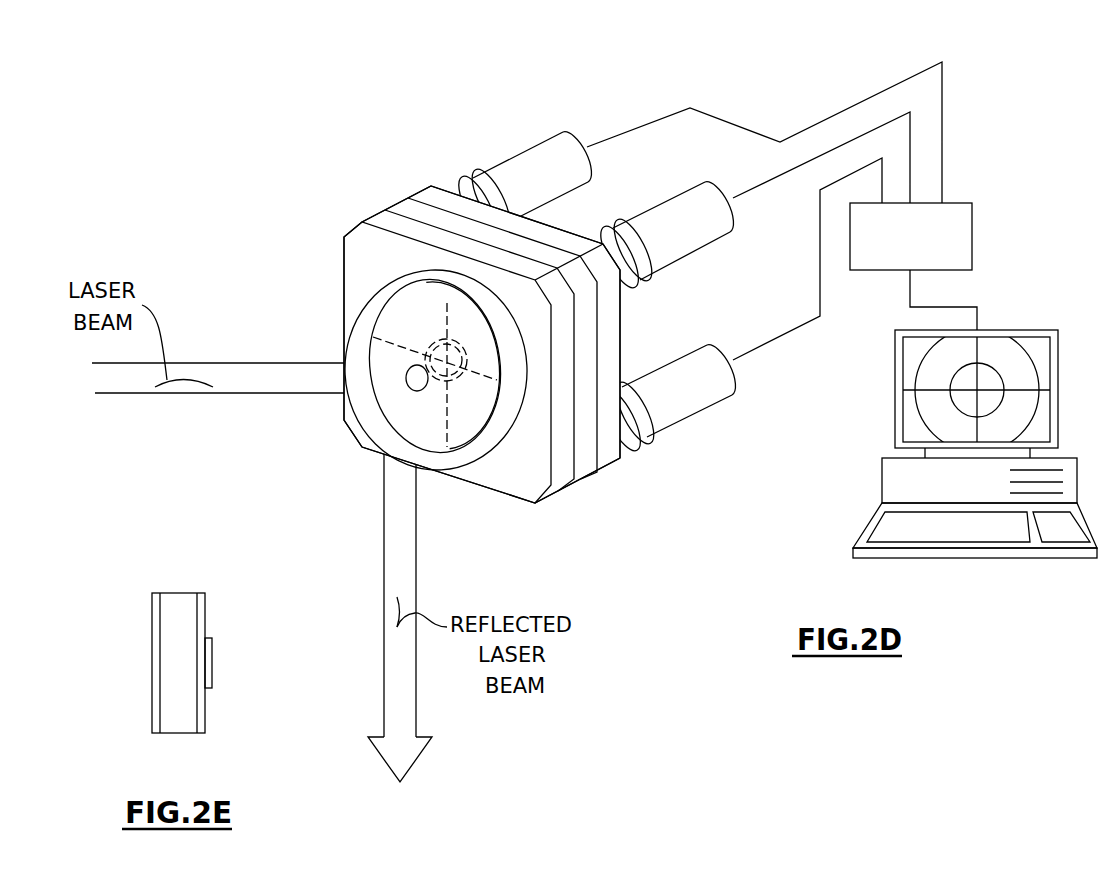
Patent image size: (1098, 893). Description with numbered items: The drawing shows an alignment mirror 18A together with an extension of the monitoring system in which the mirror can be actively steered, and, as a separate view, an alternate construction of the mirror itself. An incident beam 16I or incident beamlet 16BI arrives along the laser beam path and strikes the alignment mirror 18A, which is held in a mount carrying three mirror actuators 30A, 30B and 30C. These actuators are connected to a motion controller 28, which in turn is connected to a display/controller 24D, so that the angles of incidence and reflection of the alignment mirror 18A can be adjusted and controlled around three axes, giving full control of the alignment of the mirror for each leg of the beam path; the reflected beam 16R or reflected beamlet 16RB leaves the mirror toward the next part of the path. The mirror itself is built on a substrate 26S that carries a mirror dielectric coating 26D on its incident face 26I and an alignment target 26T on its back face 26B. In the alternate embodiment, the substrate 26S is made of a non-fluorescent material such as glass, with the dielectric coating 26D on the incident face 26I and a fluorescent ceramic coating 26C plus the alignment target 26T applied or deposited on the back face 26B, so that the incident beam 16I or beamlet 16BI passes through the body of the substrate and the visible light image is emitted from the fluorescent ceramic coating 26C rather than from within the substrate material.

In FIG. 2D, the alignment mirror 18A is at (370, 263).
In FIG. 2D, the incident beam 16I is at (280, 363).
In FIG. 2D, the incident beamlet 16BI is at (238, 354).
In FIG. 2D, the reflected laser beam 16R is at (385, 545).
In FIG. 2D, the reflected laser beam 16RB is at (341, 586).
In FIG. 2D, the fluorescing substrate 26S is at (510, 367).
In FIG. 2E, the fluorescing substrate 26S is at (180, 565).
In FIG. 2D, the mirror dielectric coating 26D is at (470, 433).
In FIG. 2E, the mirror dielectric coating 26D is at (152, 603).
In FIG. 2E, the fluorescent ceramic coating 26C is at (205, 610).
In FIG. 2E, the alignment target 26T is at (212, 663).
In FIG. 2E, the incident face 26I is at (122, 663).
In FIG. 2E, the back face 26B is at (248, 694).
In FIG. 2D, the mirror actuator 30A is at (592, 170).
In FIG. 2D, the mirror actuator 30B is at (735, 205).
In FIG. 2D, the mirror actuator 30C is at (736, 385).
In FIG. 2D, the motion controller 28 is at (972, 233).
In FIG. 2D, the display/controller 24D is at (1017, 328).